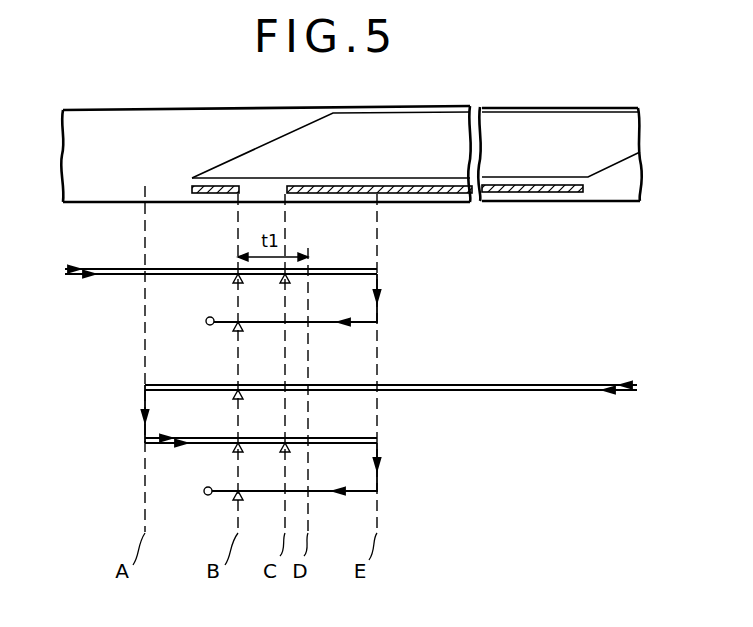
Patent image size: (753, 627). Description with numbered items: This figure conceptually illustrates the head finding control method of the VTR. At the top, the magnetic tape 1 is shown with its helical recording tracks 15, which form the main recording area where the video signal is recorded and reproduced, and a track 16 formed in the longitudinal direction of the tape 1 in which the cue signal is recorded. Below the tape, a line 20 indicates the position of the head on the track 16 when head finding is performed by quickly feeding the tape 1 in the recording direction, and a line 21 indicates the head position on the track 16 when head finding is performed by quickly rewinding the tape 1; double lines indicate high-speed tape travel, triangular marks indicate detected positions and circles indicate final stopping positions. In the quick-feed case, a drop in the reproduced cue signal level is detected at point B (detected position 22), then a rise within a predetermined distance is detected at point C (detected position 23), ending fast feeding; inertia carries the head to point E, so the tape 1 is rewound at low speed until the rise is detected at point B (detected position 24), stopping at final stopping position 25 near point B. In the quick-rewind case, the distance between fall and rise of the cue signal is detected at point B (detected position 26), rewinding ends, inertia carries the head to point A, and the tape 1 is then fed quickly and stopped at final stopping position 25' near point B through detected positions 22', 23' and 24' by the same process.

The magnetic tape 1 is at (173, 118).
The helical recording tracks 15 is at (571, 125).
The track 16 is at (555, 190).
The line 20 is at (379, 306).
The line 21 is at (145, 432).
The detected position 22 is at (219, 289).
The detected position 23 is at (270, 294).
The detected position 24 is at (219, 344).
The final stopping position 25 is at (189, 323).
The detected position 26 is at (240, 400).
The detected position 22' is at (216, 461).
The detected position 23' is at (267, 462).
The detected position 24' is at (255, 512).
The final stopping position 25' is at (193, 510).